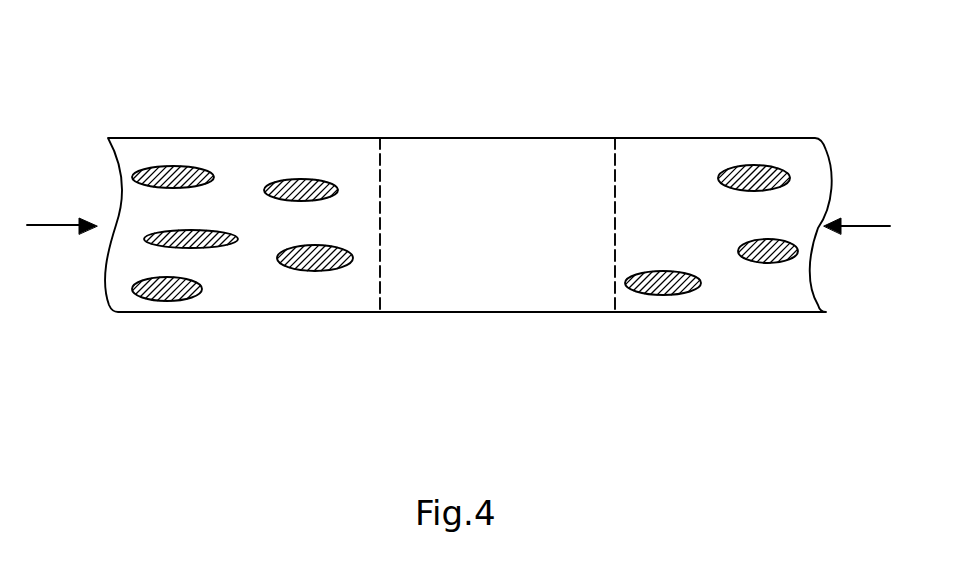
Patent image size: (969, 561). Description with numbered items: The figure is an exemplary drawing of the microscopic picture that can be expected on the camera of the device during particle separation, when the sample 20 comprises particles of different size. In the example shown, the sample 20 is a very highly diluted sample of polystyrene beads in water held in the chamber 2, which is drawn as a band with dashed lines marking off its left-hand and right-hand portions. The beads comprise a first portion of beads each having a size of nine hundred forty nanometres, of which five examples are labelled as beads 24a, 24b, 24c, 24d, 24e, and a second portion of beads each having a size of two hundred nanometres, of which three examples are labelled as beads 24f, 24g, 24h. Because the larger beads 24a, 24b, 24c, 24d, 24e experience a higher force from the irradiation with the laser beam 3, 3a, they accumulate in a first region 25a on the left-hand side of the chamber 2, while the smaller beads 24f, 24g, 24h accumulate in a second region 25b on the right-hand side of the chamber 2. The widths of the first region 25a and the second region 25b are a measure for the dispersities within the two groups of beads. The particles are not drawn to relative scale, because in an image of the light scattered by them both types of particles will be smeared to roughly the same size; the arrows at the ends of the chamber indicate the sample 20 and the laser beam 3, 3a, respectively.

The chamber 2 is at (776, 138).
The laser beam 3 is at (876, 279).
The running direction of the web 3a is at (857, 227).
The sample 20 is at (68, 227).
The bead 24a is at (170, 295).
The bead 24b is at (208, 248).
The bead 24c is at (163, 167).
The bead 24d is at (310, 182).
The bead 24e is at (320, 272).
The bead 24f is at (658, 290).
The bead 24g is at (765, 260).
The bead 24h is at (760, 167).
The first region 25a is at (237, 152).
The second region 25b is at (657, 167).